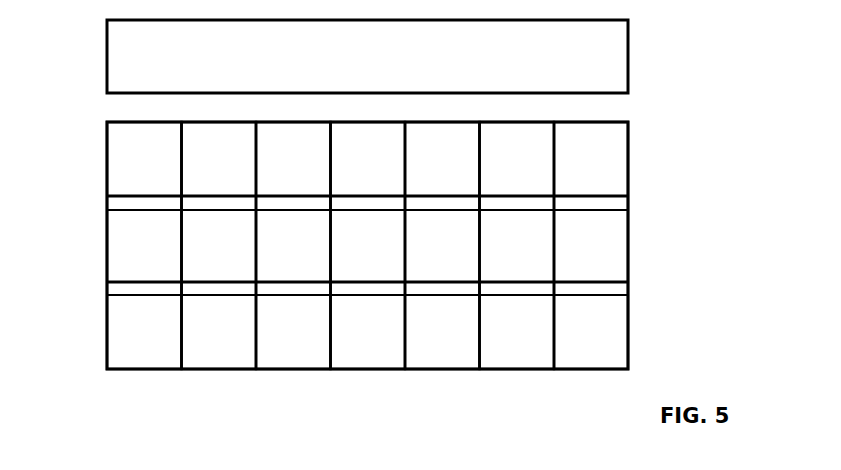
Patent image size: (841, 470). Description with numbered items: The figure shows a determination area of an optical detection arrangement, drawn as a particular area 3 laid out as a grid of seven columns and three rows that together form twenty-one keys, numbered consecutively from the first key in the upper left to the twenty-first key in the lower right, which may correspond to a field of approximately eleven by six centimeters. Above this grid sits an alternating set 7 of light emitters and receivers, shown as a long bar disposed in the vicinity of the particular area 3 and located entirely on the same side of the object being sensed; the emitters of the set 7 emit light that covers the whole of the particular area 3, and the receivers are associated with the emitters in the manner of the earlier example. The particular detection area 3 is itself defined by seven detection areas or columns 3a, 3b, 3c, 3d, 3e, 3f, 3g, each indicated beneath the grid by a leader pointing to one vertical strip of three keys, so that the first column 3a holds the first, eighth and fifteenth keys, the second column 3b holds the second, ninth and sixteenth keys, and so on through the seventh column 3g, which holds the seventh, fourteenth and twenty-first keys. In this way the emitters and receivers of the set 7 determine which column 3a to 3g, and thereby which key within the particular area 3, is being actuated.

The alternating set of emitters and receivers 7 is at (107, 55).
The particular area 3 is at (107, 228).
The detection area or column 3a is at (142, 377).
The detection area or column 3b is at (216, 377).
The detection area or column 3c is at (291, 377).
The detection area or column 3d is at (365, 377).
The detection area or column 3e is at (440, 377).
The detection area or column 3f is at (514, 377).
The detection area or column 3g is at (588, 377).